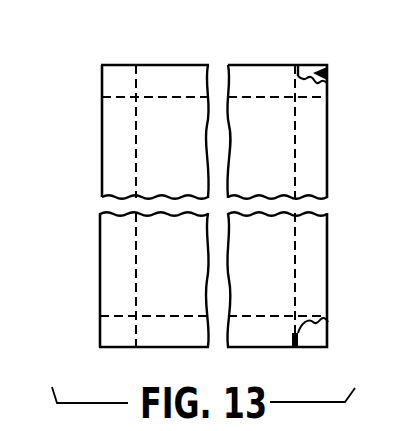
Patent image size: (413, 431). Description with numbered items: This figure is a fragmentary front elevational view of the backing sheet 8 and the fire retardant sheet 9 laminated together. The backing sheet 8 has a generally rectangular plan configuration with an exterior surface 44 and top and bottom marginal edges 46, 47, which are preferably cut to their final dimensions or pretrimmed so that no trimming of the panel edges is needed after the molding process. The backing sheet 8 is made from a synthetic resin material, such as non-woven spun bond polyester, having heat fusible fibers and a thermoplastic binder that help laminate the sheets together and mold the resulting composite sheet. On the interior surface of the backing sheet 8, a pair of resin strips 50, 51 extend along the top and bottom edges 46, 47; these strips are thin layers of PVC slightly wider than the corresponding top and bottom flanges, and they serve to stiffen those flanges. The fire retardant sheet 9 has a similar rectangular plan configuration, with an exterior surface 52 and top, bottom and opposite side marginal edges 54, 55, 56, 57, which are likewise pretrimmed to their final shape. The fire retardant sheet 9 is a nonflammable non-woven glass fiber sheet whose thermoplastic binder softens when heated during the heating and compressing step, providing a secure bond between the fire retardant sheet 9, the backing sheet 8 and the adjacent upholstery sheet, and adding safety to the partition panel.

The backing sheet 8 is at (322, 72).
The fire retardant sheet 9 is at (318, 139).
The exterior surface 44 is at (306, 69).
The top marginal edge 46 is at (313, 66).
The bottom marginal edge 47 is at (303, 348).
The resin strip 50 is at (100, 82).
The resin strip 51 is at (110, 330).
The exterior surface 52 is at (208, 143).
The top marginal edge 54 is at (183, 65).
The bottom marginal edge 55 is at (122, 349).
The side marginal edge 56 is at (99, 261).
The side marginal edge 57 is at (328, 250).